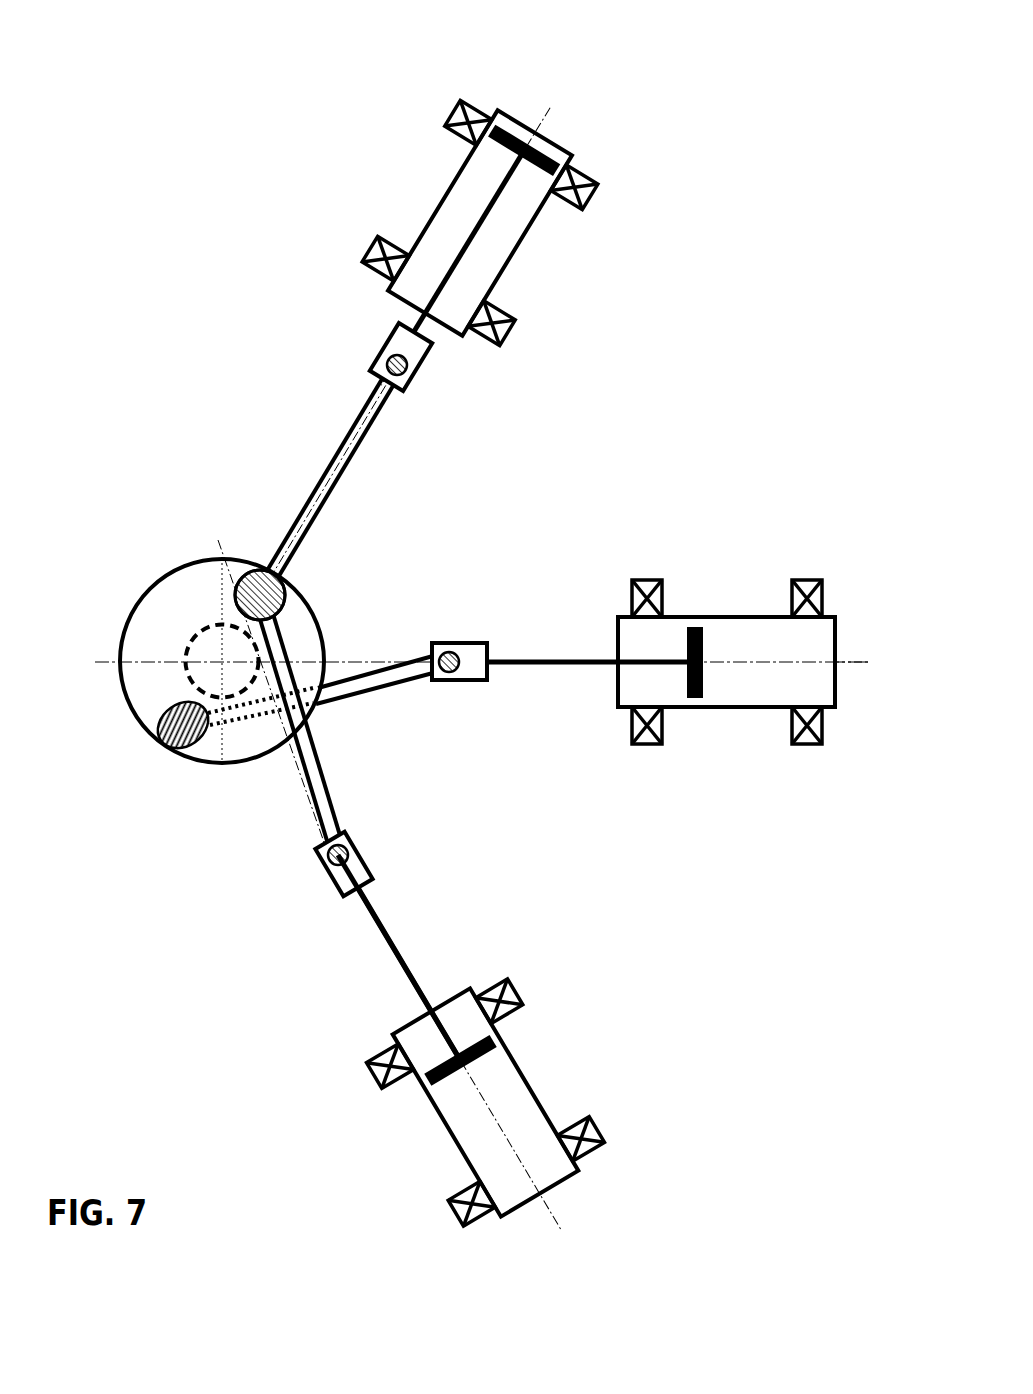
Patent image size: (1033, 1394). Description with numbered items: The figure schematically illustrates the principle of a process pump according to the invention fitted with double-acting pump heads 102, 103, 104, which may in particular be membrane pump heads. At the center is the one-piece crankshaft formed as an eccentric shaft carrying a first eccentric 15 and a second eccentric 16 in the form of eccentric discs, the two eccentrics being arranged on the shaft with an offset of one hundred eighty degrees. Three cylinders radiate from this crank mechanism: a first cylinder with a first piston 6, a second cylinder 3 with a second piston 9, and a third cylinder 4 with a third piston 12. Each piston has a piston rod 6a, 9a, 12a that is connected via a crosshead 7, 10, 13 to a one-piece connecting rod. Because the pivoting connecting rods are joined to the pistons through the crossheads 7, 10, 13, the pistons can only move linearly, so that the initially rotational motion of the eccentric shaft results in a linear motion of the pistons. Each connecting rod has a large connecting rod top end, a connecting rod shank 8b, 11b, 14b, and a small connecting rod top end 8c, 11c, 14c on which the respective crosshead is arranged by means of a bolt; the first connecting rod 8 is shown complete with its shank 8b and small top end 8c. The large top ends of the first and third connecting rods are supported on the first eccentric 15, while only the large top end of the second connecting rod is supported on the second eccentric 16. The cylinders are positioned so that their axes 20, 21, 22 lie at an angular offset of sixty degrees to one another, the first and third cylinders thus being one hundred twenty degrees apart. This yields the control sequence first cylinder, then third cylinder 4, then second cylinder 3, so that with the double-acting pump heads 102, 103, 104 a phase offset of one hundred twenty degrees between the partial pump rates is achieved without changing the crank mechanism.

The second cylinder 3 is at (680, 608).
The third cylinder 4 is at (485, 1102).
The first piston 6 is at (524, 150).
The piston rod 6a is at (461, 254).
The first crosshead 7 is at (390, 335).
The first connecting rod 8 is at (305, 483).
The connecting rod shank 8b is at (348, 428).
The small connecting rod top end 8c is at (380, 368).
The second piston 9 is at (697, 712).
The piston rod 9a is at (575, 655).
The second crosshead 10 is at (485, 640).
The connecting rod shank 11b is at (378, 640).
The small connecting rod top end 11c is at (447, 646).
The third piston 12 is at (460, 1060).
The piston rod 12a is at (399, 958).
The third crosshead 13 is at (372, 870).
The connecting rod shank 14b is at (325, 777).
The small connecting rod top end 14c is at (320, 865).
The first eccentric 15 is at (243, 572).
The second eccentric 16 is at (170, 762).
The axis 20 is at (465, 247).
The axis 21 is at (858, 632).
The axis 22 is at (446, 1037).
The double-acting pump head 102 is at (526, 222).
The double-acting pump head 103 is at (744, 627).
The double-acting pump head 104 is at (459, 1037).